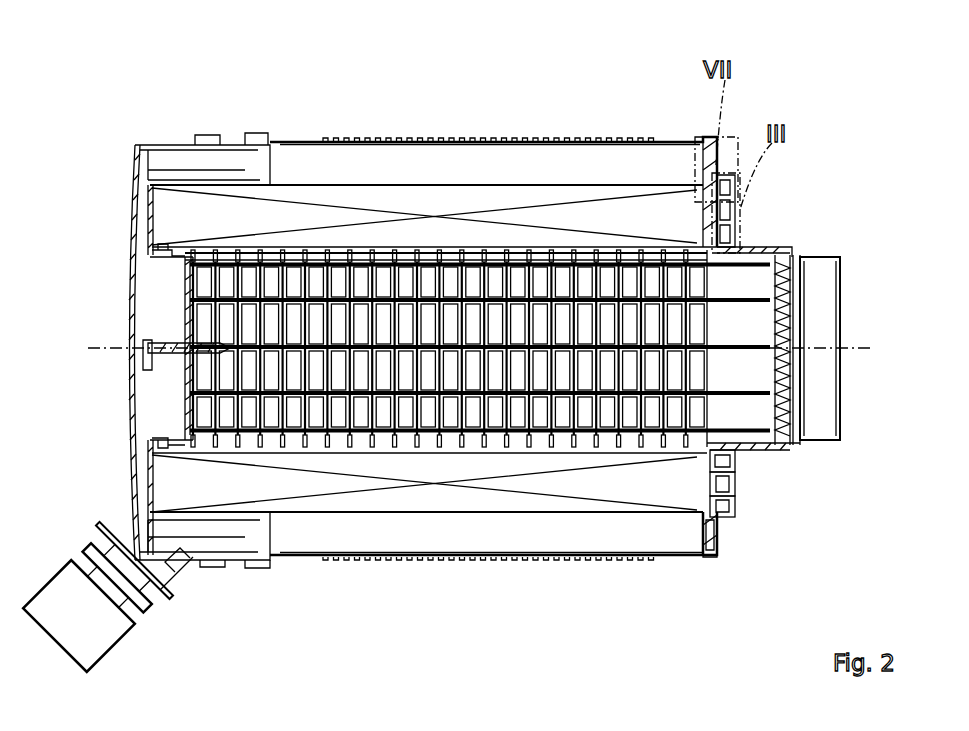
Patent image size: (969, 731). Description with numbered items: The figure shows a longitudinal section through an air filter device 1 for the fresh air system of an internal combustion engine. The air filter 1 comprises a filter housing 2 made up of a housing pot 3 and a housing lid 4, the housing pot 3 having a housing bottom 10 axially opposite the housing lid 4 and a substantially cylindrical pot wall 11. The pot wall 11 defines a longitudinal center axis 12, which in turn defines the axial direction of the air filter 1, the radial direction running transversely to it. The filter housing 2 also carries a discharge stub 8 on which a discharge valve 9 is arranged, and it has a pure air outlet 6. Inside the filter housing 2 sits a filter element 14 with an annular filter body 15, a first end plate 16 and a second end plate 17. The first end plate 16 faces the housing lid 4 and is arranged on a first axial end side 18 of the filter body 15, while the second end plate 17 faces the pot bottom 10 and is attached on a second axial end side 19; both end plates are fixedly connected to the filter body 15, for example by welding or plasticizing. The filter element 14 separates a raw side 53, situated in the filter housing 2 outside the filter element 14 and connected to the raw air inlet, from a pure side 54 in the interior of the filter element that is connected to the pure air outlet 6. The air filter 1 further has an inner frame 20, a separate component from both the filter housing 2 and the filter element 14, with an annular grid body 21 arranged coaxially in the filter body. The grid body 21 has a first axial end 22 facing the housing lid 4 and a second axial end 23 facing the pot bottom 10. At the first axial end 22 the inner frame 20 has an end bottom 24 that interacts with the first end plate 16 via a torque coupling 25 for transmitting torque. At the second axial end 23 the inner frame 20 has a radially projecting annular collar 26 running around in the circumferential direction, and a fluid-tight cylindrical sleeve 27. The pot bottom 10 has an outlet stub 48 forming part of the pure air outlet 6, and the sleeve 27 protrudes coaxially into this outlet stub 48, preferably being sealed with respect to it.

The air filter device 1 is at (860, 158).
The filter housing 2 is at (493, 139).
The housing pot 3 is at (652, 141).
The housing lid 4 is at (132, 249).
The pure air outlet 6 is at (822, 258).
The discharge stub 8 is at (172, 565).
The discharge valve 9 is at (115, 632).
The housing bottom 10 is at (740, 517).
The pot wall 11 is at (425, 139).
The longitudinal center axis 12 is at (870, 322).
The filter element 14 is at (378, 186).
The filter body 15 is at (333, 195).
The first end plate 16 is at (146, 197).
The second end plate 17 is at (728, 556).
The first axial end side 18 is at (146, 484).
The second axial end side 19 is at (740, 487).
The inner frame 20 is at (548, 250).
The grid body 21 is at (584, 251).
The first axial end 22 is at (160, 246).
The second axial end 23 is at (780, 453).
The end bottom 24 is at (183, 403).
The torque coupling 25 is at (182, 322).
The annular collar 26 is at (740, 458).
The cylindrical sleeve 27 is at (760, 375).
The outlet stub 48 is at (775, 247).
The raw side 53 is at (432, 556).
The pure side 54 is at (494, 425).